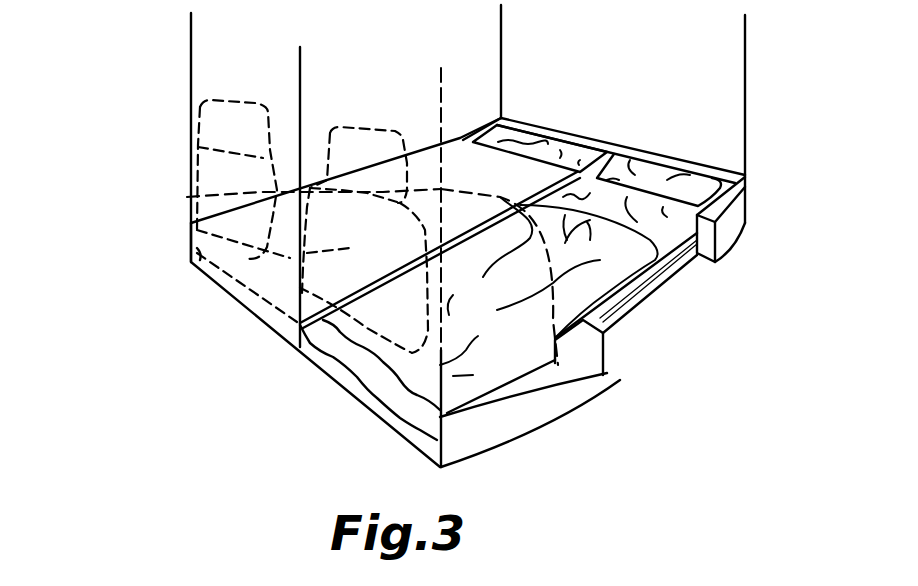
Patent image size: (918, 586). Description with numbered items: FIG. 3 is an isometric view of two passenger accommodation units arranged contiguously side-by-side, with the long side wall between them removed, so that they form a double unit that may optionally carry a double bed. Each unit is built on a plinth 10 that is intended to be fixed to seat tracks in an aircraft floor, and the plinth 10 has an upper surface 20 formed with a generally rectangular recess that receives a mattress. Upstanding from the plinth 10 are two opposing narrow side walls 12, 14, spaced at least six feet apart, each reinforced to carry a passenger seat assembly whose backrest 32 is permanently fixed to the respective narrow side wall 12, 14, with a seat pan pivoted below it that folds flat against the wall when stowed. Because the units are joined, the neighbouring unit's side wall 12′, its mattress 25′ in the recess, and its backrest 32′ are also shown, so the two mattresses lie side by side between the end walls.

The plinth 10 is at (372, 398).
The narrow side wall 12 is at (558, 365).
The side wall of the neighbouring unit 12′ is at (240, 78).
The narrow side wall 14 is at (705, 100).
The upper surface 20 is at (622, 300).
The mattress of the neighbouring unit 25′ is at (453, 163).
The backrest 32 is at (320, 247).
The backrest of the neighbouring unit 32′ is at (187, 197).